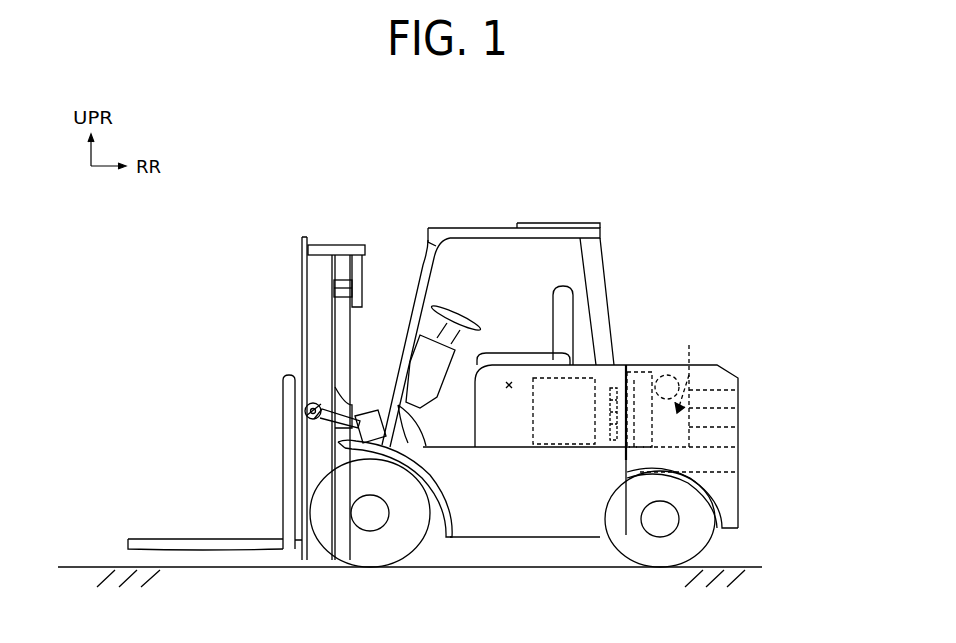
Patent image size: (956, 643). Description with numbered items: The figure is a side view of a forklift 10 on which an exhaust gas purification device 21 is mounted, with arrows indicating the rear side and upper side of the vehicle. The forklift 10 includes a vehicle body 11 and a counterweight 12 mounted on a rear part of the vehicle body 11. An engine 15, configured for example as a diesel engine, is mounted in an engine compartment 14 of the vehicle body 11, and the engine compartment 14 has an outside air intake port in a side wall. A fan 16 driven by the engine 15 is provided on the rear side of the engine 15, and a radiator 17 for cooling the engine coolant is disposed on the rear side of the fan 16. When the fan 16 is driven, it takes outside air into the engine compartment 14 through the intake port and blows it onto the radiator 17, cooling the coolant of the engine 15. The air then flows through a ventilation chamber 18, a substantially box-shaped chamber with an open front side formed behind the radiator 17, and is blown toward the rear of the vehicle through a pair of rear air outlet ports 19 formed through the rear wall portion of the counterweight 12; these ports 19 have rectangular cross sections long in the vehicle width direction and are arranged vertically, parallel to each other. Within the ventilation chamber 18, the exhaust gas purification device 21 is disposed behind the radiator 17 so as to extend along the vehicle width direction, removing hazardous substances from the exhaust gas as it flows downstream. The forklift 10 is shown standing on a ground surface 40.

The forklift 10 is at (288, 180).
The vehicle body 11 is at (540, 525).
The counterweight 12 is at (720, 360).
The engine compartment 14 is at (508, 378).
The engine 15 is at (553, 437).
The fan 16 is at (610, 437).
The radiator 17 is at (636, 370).
The ventilation chamber 18 is at (691, 382).
The rear air outlet ports 19 is at (725, 397).
The exhaust gas purification device 21 is at (666, 374).
The ground surface 40 is at (88, 565).